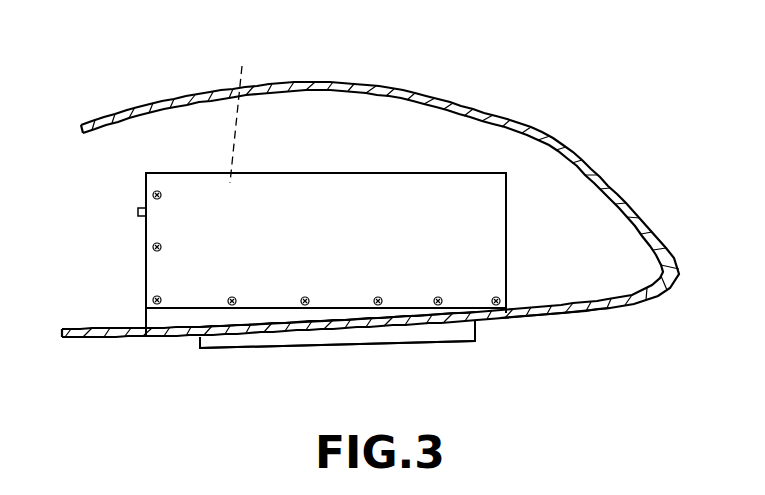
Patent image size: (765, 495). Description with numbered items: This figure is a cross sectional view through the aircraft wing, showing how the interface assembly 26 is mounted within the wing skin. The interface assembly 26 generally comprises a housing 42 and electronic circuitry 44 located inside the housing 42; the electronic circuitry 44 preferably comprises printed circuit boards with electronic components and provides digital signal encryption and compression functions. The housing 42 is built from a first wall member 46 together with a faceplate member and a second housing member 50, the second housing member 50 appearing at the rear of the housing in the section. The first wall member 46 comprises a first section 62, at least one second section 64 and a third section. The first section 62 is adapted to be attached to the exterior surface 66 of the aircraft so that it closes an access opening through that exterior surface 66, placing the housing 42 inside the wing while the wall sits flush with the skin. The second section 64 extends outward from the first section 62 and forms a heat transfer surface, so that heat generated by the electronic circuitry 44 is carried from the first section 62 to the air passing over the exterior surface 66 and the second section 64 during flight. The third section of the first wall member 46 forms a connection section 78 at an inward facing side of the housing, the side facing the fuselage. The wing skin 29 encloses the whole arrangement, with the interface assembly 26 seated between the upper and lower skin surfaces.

The upper skin 29 is at (320, 84).
The electronic circuitry 44 is at (243, 111).
The housing 42 is at (372, 188).
The interface assembly 26 is at (448, 183).
The second housing member 50 is at (500, 220).
The connection section 78 is at (160, 315).
The first wall member 46 is at (213, 338).
The second section 64 is at (417, 343).
The first section 62 is at (345, 315).
The exterior surface 66 is at (575, 313).